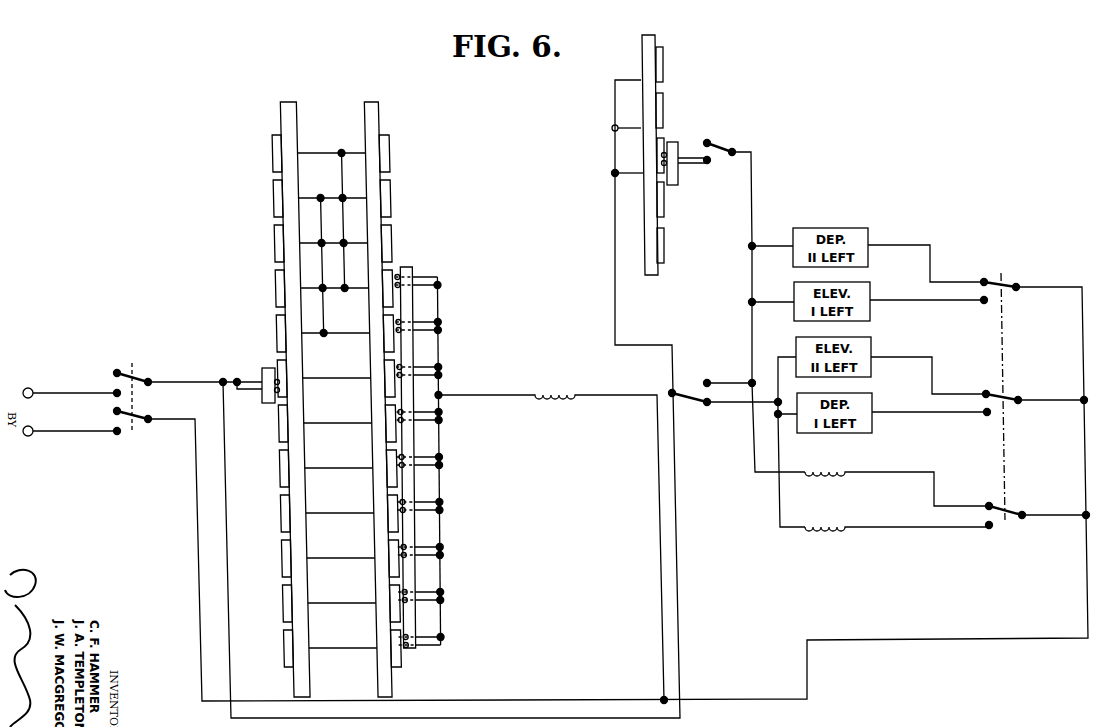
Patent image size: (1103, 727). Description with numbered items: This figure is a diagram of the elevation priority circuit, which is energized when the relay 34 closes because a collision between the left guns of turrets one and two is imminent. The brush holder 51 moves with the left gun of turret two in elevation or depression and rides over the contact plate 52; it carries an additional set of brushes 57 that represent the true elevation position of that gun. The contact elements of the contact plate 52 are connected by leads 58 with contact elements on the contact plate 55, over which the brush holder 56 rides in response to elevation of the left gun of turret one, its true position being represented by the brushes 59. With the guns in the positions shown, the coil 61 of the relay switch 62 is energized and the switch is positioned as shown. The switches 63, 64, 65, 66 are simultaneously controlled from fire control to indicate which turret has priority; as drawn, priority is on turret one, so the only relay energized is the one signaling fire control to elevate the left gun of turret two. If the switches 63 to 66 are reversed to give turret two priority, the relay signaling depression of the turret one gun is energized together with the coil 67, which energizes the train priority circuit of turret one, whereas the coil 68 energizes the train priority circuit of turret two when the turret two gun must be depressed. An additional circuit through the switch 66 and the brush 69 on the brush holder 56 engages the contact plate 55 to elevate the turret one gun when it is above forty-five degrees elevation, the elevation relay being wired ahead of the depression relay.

The relay 34 is at (132, 378).
The brush holder 51 is at (262, 368).
The contact plate 52 is at (306, 683).
The contact plate 55 is at (392, 683).
The brush holder 56 is at (403, 267).
The brushes 57 is at (282, 400).
The leads 58 is at (366, 333).
The brushes 59 is at (402, 648).
The coil 61 is at (553, 390).
The relay switch 62 is at (684, 396).
The switch 63 is at (1012, 512).
The switch 64 is at (1008, 397).
The switch 65 is at (1005, 283).
The switch 66 is at (725, 150).
The coil 67 is at (836, 530).
The coil 68 is at (838, 470).
The brush 69 is at (665, 150).